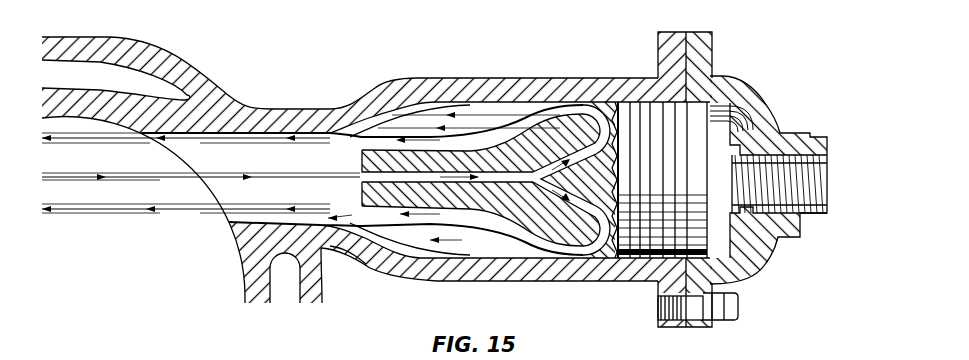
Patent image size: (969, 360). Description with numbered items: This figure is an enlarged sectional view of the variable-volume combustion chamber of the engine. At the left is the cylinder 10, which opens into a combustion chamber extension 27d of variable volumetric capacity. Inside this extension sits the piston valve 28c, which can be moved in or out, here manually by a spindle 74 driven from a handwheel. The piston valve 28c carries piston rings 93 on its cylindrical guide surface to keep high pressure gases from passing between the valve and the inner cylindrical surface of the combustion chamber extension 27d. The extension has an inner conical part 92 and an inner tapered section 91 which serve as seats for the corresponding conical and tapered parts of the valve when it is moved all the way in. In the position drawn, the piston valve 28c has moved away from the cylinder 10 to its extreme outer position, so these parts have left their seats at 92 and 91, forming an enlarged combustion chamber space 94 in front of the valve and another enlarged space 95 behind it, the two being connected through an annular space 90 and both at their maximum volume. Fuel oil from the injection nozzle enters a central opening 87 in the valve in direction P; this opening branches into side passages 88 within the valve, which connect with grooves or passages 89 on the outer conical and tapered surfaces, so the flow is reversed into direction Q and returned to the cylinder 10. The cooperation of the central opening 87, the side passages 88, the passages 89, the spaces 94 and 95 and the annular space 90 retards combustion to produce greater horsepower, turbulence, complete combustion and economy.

The cylinder 10 is at (244, 247).
The combustion chamber extension 27d is at (427, 270).
The piston valve 28c is at (615, 279).
The spindle 74 is at (722, 218).
The central opening 87 is at (386, 203).
The side passages 88 is at (580, 196).
The grooves or passages 89 is at (370, 180).
The annular space 90 is at (371, 136).
The inner tapered section 91 is at (266, 222).
The inner conical part 92 is at (371, 259).
The piston rings 93 is at (632, 104).
The enlarged combustion chamber space 94 is at (301, 140).
The enlarged space 95 is at (424, 136).